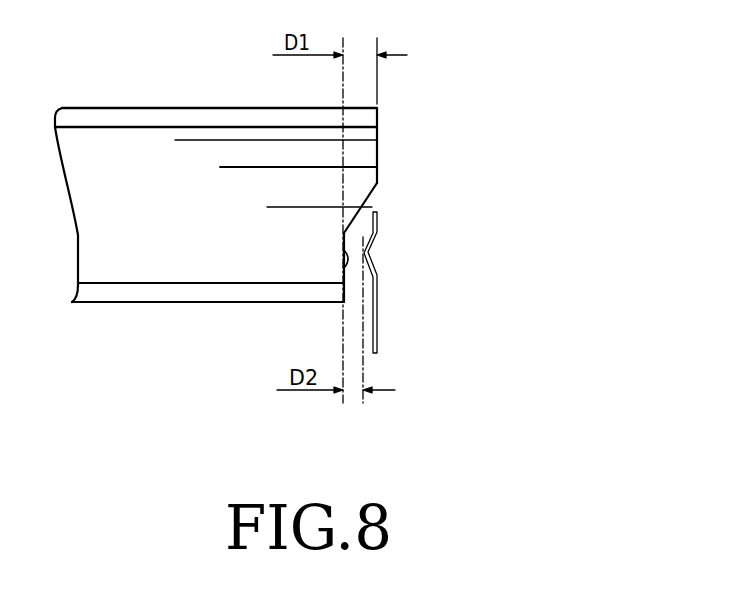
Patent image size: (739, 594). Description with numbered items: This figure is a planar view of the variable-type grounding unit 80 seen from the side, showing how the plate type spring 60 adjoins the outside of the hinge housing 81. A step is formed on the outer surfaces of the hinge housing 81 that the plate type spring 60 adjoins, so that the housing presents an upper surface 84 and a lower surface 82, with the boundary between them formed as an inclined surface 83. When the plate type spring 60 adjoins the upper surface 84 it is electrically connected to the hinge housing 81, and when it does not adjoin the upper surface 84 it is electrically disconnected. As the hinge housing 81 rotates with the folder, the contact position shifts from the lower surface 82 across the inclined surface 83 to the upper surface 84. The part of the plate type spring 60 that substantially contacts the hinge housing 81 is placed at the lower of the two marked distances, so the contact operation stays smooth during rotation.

The panel assembly 80 is at (487, 111).
The hinge housing 81 is at (197, 228).
The lower surface 82 is at (347, 264).
The inclined surface 83 is at (377, 197).
The upper surface 84 is at (377, 150).
The plate type spring 60 is at (378, 285).